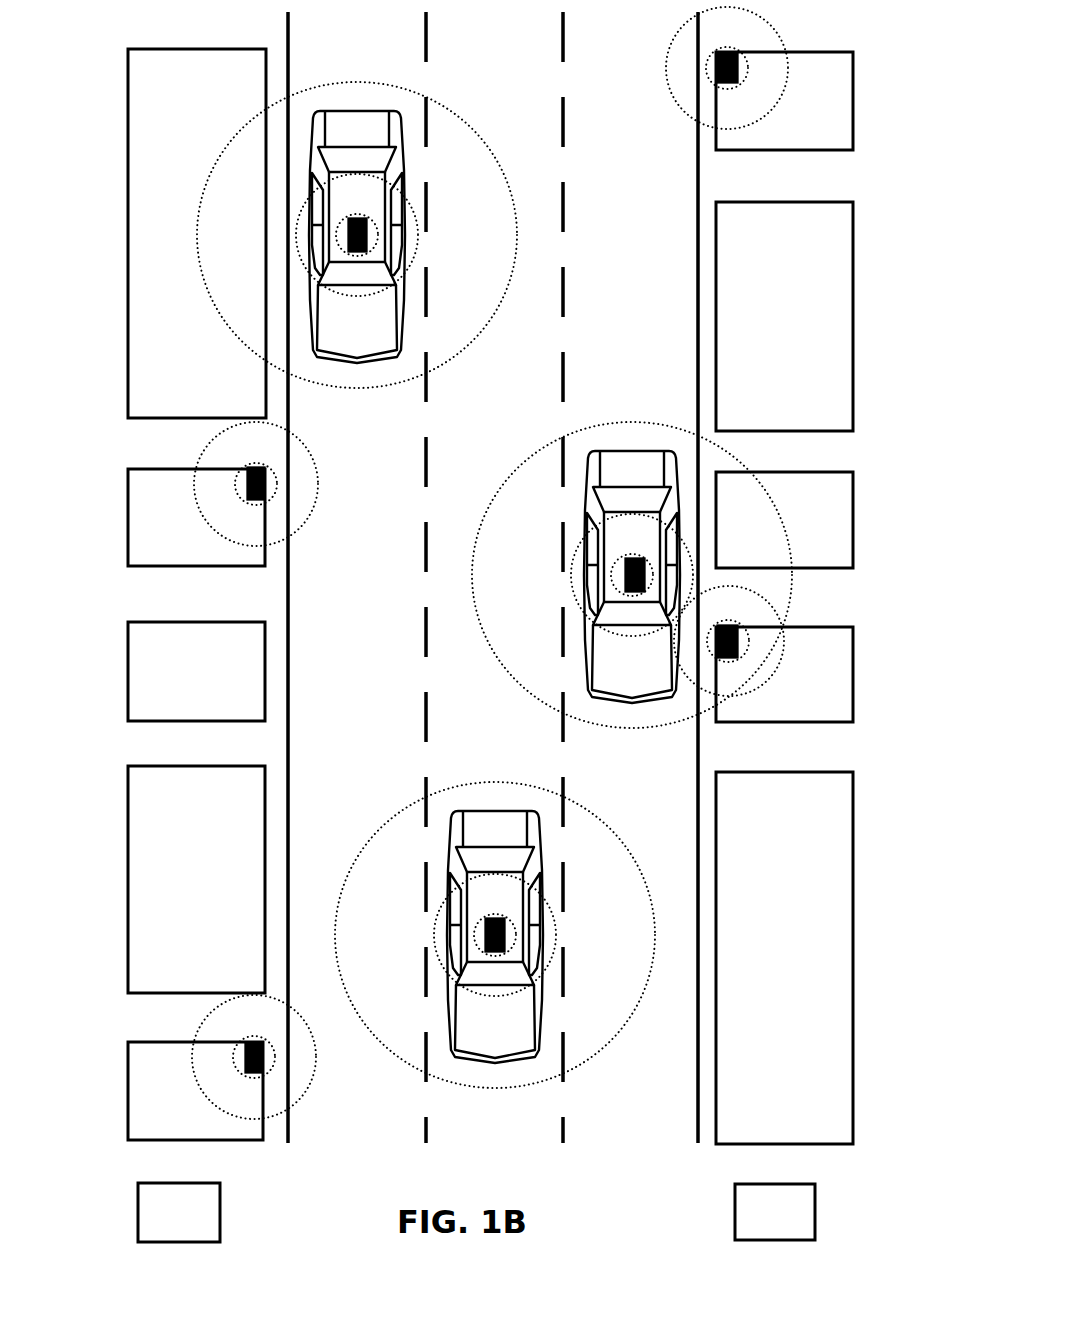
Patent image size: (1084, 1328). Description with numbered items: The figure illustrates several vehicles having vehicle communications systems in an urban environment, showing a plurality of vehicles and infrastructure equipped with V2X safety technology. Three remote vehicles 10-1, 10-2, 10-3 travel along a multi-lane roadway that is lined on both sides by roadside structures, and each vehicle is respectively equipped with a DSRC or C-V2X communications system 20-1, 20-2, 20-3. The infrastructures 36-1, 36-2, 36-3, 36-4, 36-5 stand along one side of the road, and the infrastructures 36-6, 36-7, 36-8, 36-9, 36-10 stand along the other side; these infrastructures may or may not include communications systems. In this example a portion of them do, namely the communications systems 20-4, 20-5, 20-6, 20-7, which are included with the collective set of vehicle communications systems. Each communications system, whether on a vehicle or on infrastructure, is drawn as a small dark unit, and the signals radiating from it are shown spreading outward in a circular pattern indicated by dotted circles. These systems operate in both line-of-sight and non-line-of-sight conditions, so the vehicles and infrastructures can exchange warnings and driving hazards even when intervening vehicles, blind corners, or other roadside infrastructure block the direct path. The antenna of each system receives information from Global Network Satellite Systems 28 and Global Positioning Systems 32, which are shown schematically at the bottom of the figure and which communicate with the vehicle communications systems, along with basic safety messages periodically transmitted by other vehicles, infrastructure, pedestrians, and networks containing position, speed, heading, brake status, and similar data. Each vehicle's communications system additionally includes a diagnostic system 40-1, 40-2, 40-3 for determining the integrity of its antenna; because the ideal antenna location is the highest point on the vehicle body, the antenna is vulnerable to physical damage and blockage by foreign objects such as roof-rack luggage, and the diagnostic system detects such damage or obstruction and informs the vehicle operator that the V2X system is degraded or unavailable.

The vehicle 10-1 is at (358, 110).
The vehicle 10-2 is at (492, 810).
The vehicle 10-3 is at (633, 450).
The vehicle communications system 20-1 is at (348, 237).
The vehicle communications system 20-2 is at (485, 935).
The vehicle communications system 20-3 is at (626, 577).
The communications system 20-4 is at (247, 483).
The communications system 20-5 is at (245, 1057).
The communications system 20-6 is at (717, 69).
The communications system 20-7 is at (738, 643).
The Global Network Satellite Systems (GNSS) 28 is at (138, 1210).
The Global Positioning Systems (GPS) 32 is at (735, 1210).
The infrastructure 36-1 is at (128, 233).
The infrastructure 36-2 is at (128, 517).
The infrastructure 36-3 is at (128, 669).
The infrastructure 36-4 is at (128, 880).
The infrastructure 36-5 is at (128, 1088).
The infrastructure 36-6 is at (853, 104).
The infrastructure 36-7 is at (853, 313).
The infrastructure 36-8 is at (853, 530).
The infrastructure 36-9 is at (853, 676).
The infrastructure 36-10 is at (853, 957).
The diagnostic system 40-1 is at (348, 250).
The diagnostic system 40-2 is at (505, 935).
The diagnostic system 40-3 is at (626, 569).